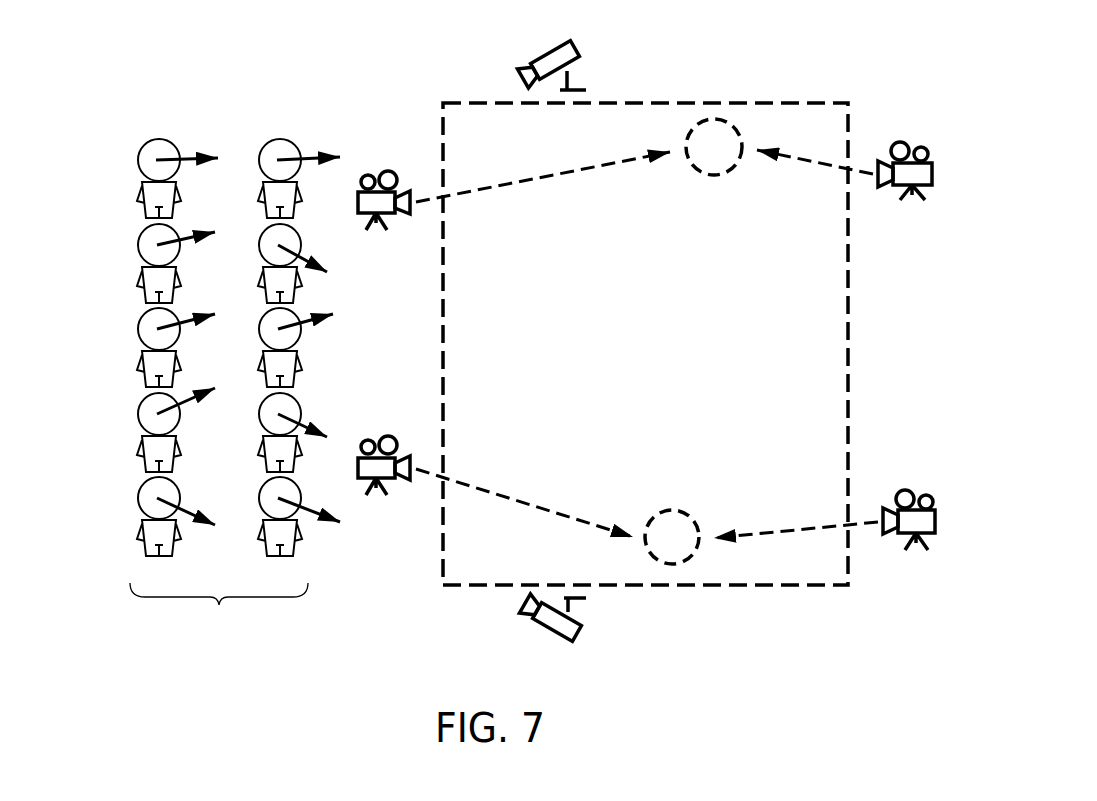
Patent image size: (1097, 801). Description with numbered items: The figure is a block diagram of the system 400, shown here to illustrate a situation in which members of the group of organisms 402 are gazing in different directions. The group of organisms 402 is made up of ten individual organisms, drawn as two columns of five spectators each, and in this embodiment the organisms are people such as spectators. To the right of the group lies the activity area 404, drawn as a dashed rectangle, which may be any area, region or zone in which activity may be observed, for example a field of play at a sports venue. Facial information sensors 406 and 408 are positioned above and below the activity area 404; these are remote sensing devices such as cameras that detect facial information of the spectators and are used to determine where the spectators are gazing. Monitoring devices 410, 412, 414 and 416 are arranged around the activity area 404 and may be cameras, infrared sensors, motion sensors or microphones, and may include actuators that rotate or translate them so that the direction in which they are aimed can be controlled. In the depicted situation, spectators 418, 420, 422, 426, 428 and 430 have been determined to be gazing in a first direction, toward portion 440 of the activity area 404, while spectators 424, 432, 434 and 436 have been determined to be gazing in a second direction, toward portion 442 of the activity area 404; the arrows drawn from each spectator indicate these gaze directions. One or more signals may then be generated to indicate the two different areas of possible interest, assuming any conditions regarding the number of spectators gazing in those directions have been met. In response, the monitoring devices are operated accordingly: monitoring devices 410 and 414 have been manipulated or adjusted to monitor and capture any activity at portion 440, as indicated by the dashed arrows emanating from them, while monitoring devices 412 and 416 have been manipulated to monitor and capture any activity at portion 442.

The system 400 is at (235, 46).
The group of organisms 402 is at (219, 610).
The activity area 404 is at (848, 368).
The facial information sensor 406 is at (585, 55).
The facial information sensor 408 is at (585, 642).
The monitoring device 410 is at (388, 171).
The monitoring device 412 is at (393, 480).
The monitoring device 414 is at (900, 142).
The monitoring device 416 is at (930, 538).
The spectator 418 is at (140, 187).
The spectator 420 is at (296, 144).
The spectator 422 is at (140, 272).
The spectator 424 is at (302, 272).
The spectator 426 is at (140, 356).
The spectator 428 is at (302, 356).
The spectator 430 is at (140, 440).
The spectator 432 is at (261, 441).
The spectator 434 is at (140, 525).
The spectator 436 is at (302, 528).
The portion of the activity area 440 is at (720, 175).
The portion of the activity area 442 is at (665, 510).